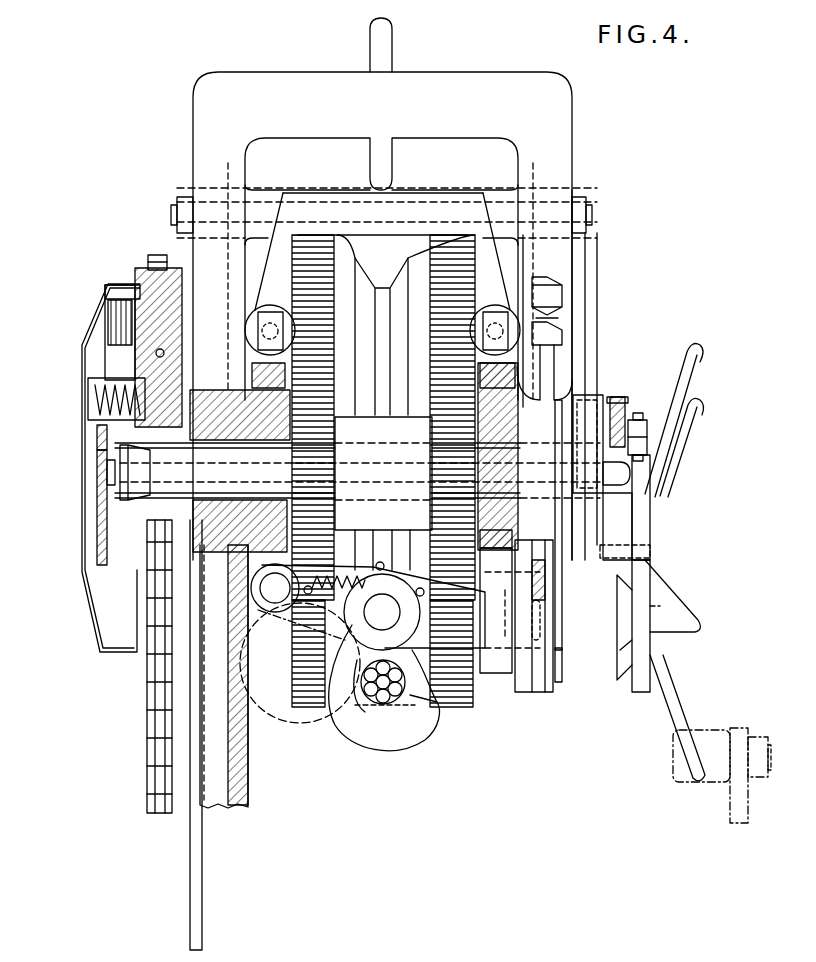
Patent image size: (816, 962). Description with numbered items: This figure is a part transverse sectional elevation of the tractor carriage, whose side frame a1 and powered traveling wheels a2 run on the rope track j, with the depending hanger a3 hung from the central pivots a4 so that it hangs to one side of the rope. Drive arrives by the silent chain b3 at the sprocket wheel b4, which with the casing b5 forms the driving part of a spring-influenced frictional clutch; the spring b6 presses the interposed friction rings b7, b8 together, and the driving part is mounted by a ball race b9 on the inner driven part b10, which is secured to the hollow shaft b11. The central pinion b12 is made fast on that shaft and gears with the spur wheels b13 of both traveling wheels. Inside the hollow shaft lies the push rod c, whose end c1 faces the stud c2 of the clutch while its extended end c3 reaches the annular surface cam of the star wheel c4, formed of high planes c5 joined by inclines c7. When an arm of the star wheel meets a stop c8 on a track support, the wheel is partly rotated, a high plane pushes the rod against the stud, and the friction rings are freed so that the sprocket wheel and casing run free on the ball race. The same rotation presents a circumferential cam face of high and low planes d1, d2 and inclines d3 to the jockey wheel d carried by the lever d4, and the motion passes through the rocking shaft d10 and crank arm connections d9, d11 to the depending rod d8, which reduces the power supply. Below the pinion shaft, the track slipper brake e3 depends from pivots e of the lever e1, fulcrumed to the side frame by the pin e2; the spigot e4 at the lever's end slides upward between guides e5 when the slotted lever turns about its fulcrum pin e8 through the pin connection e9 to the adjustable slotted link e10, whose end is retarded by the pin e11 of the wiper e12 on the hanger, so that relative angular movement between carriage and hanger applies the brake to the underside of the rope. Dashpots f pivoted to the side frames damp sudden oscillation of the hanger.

The side frame a1 is at (355, 457).
The powered traveling wheel a2 is at (376, 285).
The depending hanger a3 is at (382, 413).
The central pivot a4 is at (240, 415).
The silent chain b3 is at (157, 255).
The sprocket wheel b4 is at (140, 268).
The clutch casing b5 is at (90, 318).
The clutch spring b6 is at (95, 430).
The friction ring b7 is at (115, 290).
The friction ring b8 is at (122, 298).
The ball race b9 is at (155, 354).
The driven part of clutch b10 is at (97, 376).
The hollow shaft b11 is at (357, 471).
The central pinion b12 is at (432, 425).
The spur wheel b13 is at (313, 707).
The push rod c is at (390, 478).
The push rod end c1 is at (95, 500).
The clutch stud c2 is at (107, 468).
The extended end of push rod c3 is at (617, 472).
The star wheel c4 is at (690, 600).
The high plane c5 is at (622, 553).
The incline c7 is at (615, 510).
The stop c8 is at (673, 762).
The jockey wheel d is at (638, 413).
The high plane d1 is at (644, 507).
The low plane d2 is at (667, 710).
The incline d3 is at (642, 626).
The lever d4 is at (617, 397).
The depending rod d8 is at (197, 890).
The crank arm connection d9 is at (580, 197).
The rocking shaft d10 is at (425, 210).
The crank arm connection d11 is at (183, 197).
The pivot e is at (382, 612).
The lever e1 is at (394, 605).
The fulcrum pin e2 is at (275, 596).
The track slipper brake e3 is at (384, 688).
The spigot e4 is at (542, 624).
The guide e5 is at (510, 601).
The fulcrum pin e8 is at (538, 587).
The pin connection e9 is at (558, 682).
The adjustable slotted link e10 is at (543, 692).
The pin e11 is at (560, 410).
The wiper e12 is at (575, 470).
The dashpot f is at (270, 312).
The rope track j is at (383, 695).